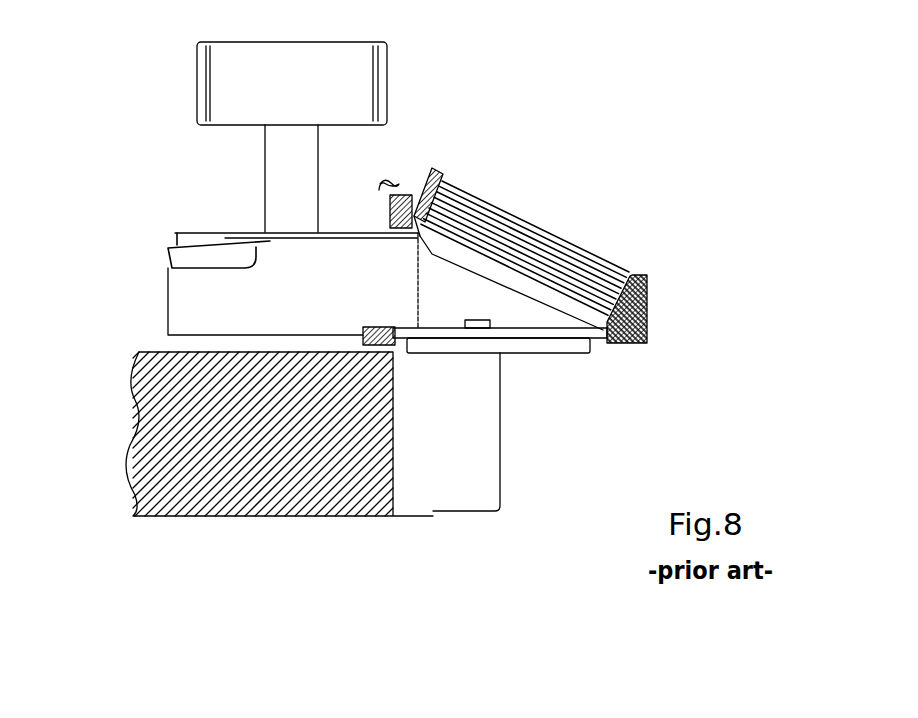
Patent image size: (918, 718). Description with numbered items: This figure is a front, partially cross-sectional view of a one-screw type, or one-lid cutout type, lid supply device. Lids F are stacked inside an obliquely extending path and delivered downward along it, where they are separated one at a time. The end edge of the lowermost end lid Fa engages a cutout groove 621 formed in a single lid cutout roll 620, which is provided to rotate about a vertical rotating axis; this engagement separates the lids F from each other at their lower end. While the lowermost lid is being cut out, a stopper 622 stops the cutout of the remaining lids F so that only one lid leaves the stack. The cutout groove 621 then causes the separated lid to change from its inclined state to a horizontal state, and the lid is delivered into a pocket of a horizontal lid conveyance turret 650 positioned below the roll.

The lid cutout roll 620 is at (188, 315).
The cutout groove 621 is at (210, 255).
The stopper 622 is at (405, 193).
The horizontal lid conveyance turret 650 is at (373, 495).
The lid F is at (515, 213).
The lowermost end lid Fa is at (518, 287).